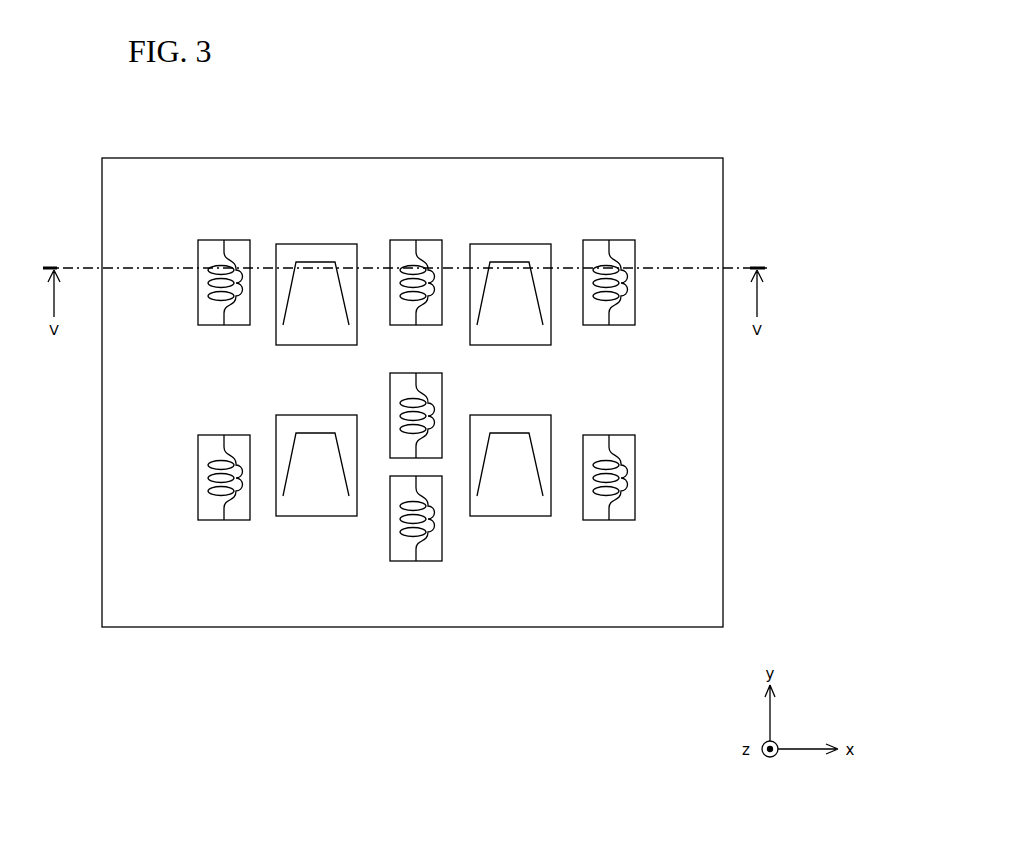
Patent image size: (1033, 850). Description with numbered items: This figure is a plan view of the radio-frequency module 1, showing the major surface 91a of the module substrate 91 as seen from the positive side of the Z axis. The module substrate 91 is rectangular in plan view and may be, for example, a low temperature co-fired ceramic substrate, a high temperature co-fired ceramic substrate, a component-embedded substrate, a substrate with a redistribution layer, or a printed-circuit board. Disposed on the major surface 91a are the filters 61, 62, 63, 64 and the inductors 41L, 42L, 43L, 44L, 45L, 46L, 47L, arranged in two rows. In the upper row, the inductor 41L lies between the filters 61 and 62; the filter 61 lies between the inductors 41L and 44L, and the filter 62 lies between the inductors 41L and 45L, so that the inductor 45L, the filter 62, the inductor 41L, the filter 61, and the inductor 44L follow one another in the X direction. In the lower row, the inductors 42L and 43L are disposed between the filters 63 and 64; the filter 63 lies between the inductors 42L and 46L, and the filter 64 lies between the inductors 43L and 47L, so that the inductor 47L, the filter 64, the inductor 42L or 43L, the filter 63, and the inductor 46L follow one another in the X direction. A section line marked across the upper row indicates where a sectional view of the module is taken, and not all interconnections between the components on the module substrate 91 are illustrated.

The radio-frequency module 1 is at (678, 88).
The module substrate 91 is at (535, 158).
The major surface 91a is at (707, 191).
The inductor 41L is at (405, 240).
The inductor 42L is at (390, 414).
The inductor 43L is at (403, 561).
The inductor 44L is at (599, 240).
The inductor 45L is at (216, 240).
The inductor 46L is at (598, 520).
The inductor 47L is at (215, 520).
The filter 61 is at (502, 244).
The filter 62 is at (305, 244).
The filter 63 is at (503, 516).
The filter 64 is at (303, 516).